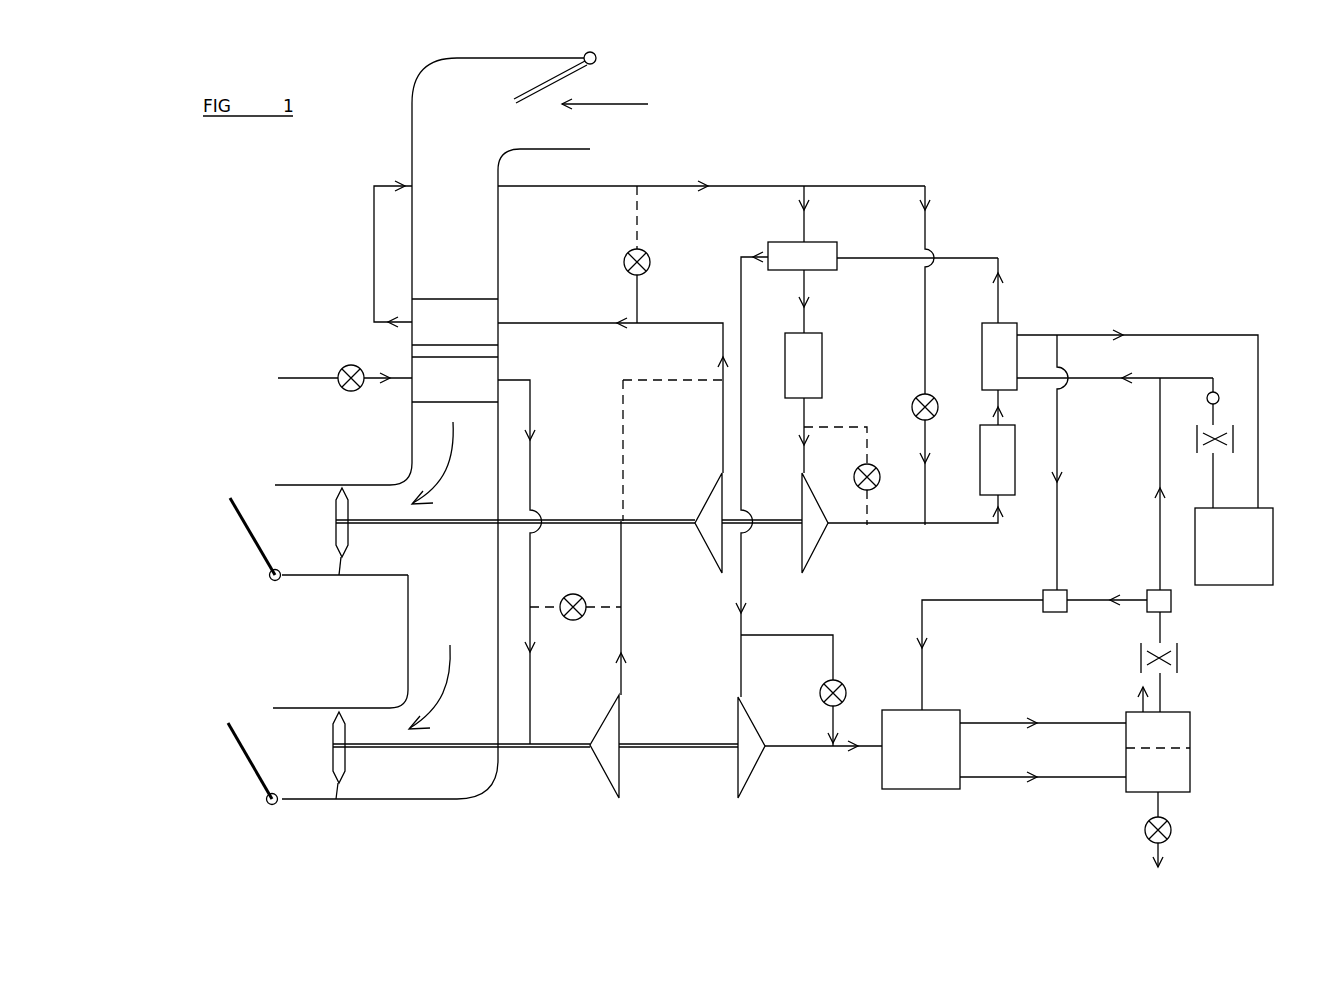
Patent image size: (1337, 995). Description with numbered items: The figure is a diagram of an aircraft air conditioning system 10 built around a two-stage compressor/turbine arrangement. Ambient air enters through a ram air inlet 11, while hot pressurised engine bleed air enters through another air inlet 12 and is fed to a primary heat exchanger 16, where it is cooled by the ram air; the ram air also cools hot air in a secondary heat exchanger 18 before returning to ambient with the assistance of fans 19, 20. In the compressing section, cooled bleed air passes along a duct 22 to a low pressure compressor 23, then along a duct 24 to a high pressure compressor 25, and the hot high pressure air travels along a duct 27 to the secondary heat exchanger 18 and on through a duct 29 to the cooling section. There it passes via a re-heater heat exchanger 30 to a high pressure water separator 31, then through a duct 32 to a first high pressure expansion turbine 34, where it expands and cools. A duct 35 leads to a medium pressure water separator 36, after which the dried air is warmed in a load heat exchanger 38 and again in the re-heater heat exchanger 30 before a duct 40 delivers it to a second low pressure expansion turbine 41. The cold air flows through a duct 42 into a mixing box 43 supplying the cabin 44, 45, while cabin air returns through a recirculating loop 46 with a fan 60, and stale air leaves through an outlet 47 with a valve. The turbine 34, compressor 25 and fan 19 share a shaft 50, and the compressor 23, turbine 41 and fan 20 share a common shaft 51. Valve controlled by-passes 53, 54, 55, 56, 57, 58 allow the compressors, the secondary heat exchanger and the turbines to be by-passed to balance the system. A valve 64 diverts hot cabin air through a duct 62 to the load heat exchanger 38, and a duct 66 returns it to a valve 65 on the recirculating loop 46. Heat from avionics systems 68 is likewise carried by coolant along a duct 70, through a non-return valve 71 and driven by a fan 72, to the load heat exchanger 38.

The air conditioning system 10 is at (845, 177).
The ram air inlet 11 is at (598, 97).
The air inlet 12 is at (393, 372).
The primary heat exchanger 16 is at (459, 397).
The secondary heat exchanger 18 is at (453, 313).
The fan 19 is at (348, 533).
The fan 20 is at (345, 763).
The duct 22 is at (530, 480).
The low pressure compressor 23 is at (598, 765).
The duct 24 is at (622, 680).
The high pressure compressor 25 is at (717, 558).
The duct 27 is at (557, 323).
The duct 29 is at (737, 185).
The re-heater heat exchanger 30 is at (830, 242).
The high pressure water separator 31 is at (822, 362).
The duct 32 is at (802, 410).
The first high pressure expansion turbine 34 is at (817, 540).
The duct 35 is at (998, 525).
The medium pressure water separator 36 is at (980, 477).
The load heat exchanger 38 is at (982, 365).
The duct 40 is at (743, 485).
The second low pressure expansion turbine 41 is at (757, 770).
The duct 42 is at (812, 750).
The mixing box 43 is at (940, 790).
The aircraft cabin 44 is at (1190, 732).
The aircraft cabin 45 is at (1187, 780).
The recirculating loop 46 is at (1133, 600).
The outlet 47 is at (1158, 805).
The shaft 50 is at (778, 528).
The common shaft 51 is at (698, 750).
The valve controlled by-pass 53 is at (550, 612).
The valve controlled by-pass 54 is at (652, 380).
The valve controlled by-pass 55 is at (640, 300).
The valve controlled by-pass 56 is at (847, 423).
The valve controlled by-pass 57 is at (925, 442).
The valve controlled by-pass 58 is at (772, 635).
The fan 60 is at (1163, 677).
The duct 62 is at (1160, 472).
The valve 64 is at (1160, 590).
The valve 65 is at (1056, 612).
The duct 66 is at (1058, 515).
The avionics systems 68 is at (1252, 585).
The duct 70 is at (1192, 378).
The non-return valve 71 is at (1208, 397).
The fan 72 is at (1232, 440).